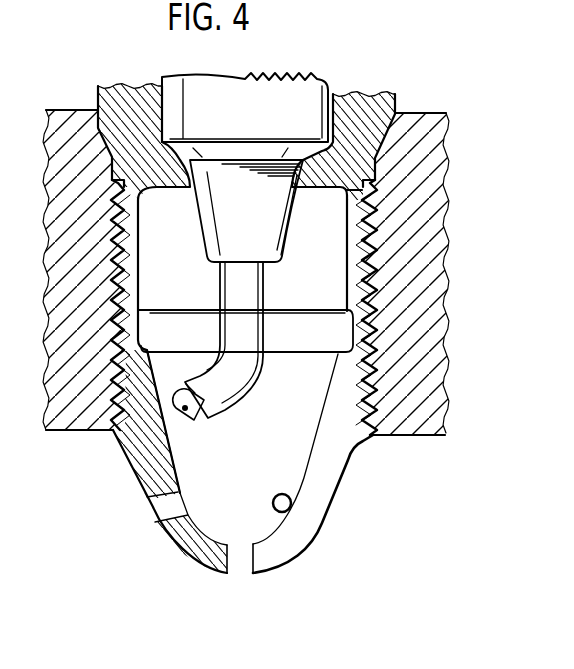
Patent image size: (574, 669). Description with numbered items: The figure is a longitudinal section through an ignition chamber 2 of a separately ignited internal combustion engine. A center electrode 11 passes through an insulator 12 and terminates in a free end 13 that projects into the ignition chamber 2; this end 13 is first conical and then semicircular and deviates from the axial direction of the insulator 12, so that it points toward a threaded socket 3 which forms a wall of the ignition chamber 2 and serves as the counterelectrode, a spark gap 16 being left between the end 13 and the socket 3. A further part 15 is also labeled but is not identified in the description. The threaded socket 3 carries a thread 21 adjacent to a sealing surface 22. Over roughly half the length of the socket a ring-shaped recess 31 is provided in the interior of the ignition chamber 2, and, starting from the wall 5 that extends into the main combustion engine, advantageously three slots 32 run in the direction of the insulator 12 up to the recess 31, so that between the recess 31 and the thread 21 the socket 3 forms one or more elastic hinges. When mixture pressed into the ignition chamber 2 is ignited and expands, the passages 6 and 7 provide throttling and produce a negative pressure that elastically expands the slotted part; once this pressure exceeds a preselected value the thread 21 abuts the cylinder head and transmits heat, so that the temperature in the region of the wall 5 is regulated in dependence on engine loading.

The ignition chamber 2 is at (280, 445).
The threaded socket 3 is at (93, 97).
The wall 5 is at (190, 545).
The passage 6 is at (230, 559).
The passage 7 is at (160, 497).
The center electrode 11 is at (273, 327).
The insulator 12 is at (225, 114).
The free end 13 is at (188, 415).
The insulator body 15 is at (227, 219).
The spark gap 16 is at (163, 408).
The thread 21 is at (368, 270).
The sealing surface 22 is at (391, 139).
The ring-shaped recess 31 is at (148, 330).
The slots 32 is at (340, 450).